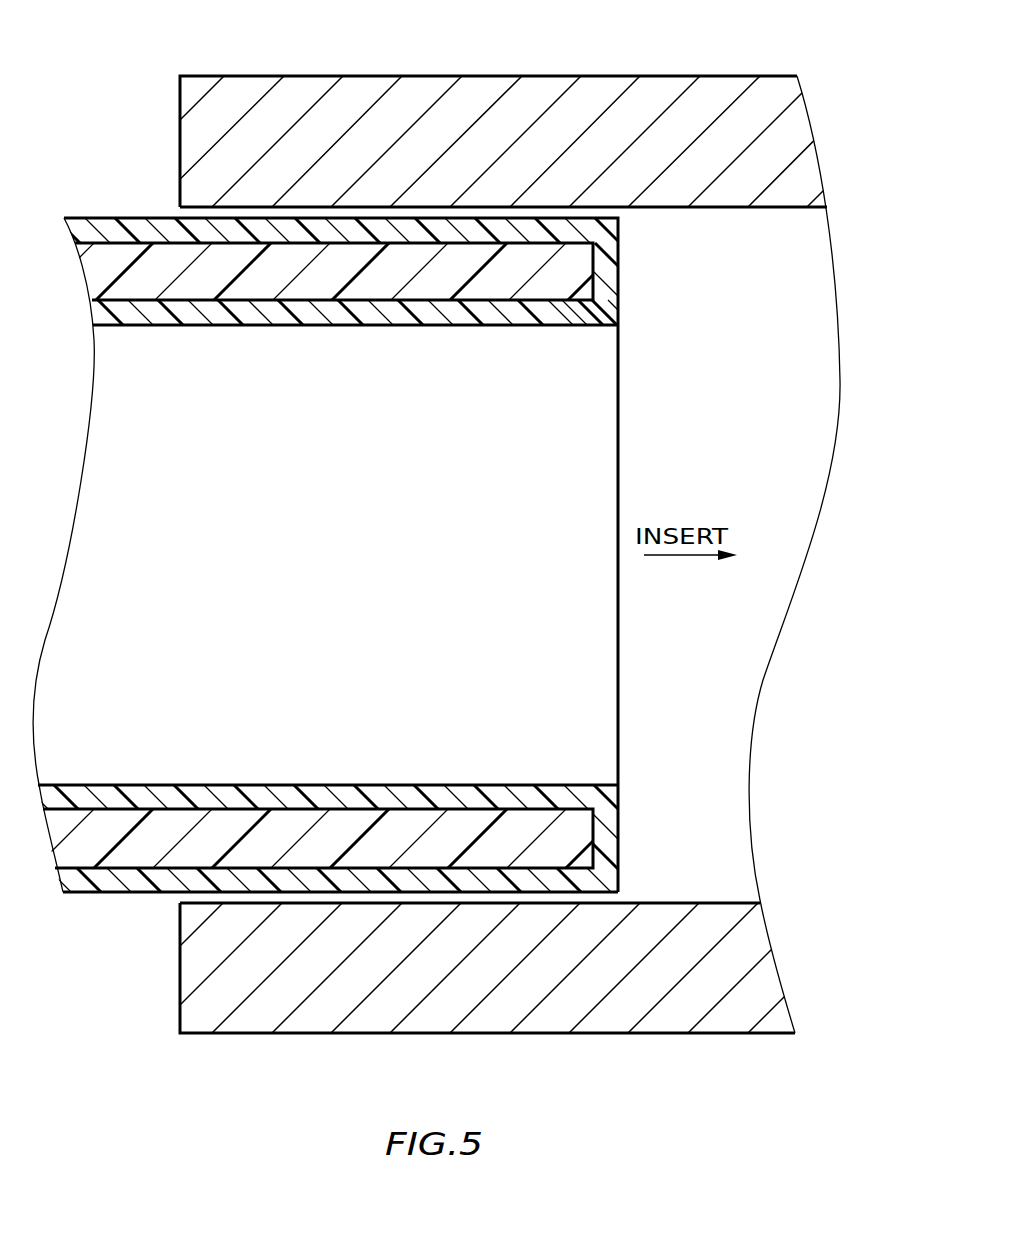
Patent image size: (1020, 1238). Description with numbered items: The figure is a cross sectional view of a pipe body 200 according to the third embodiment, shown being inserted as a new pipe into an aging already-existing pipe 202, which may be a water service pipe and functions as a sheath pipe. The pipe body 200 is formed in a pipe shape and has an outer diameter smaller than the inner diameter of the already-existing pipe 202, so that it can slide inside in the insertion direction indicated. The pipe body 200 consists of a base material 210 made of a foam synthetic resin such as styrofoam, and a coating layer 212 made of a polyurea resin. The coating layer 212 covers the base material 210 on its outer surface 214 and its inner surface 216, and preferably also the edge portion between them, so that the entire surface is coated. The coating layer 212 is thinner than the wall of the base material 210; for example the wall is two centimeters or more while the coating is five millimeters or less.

The pipe body 200 is at (468, 878).
The already-existing pipe 202 is at (493, 77).
The base material 210 is at (290, 820).
The coating layer 212 is at (132, 873).
The outer surface 214 is at (361, 498).
The inner surface 216 is at (147, 338).